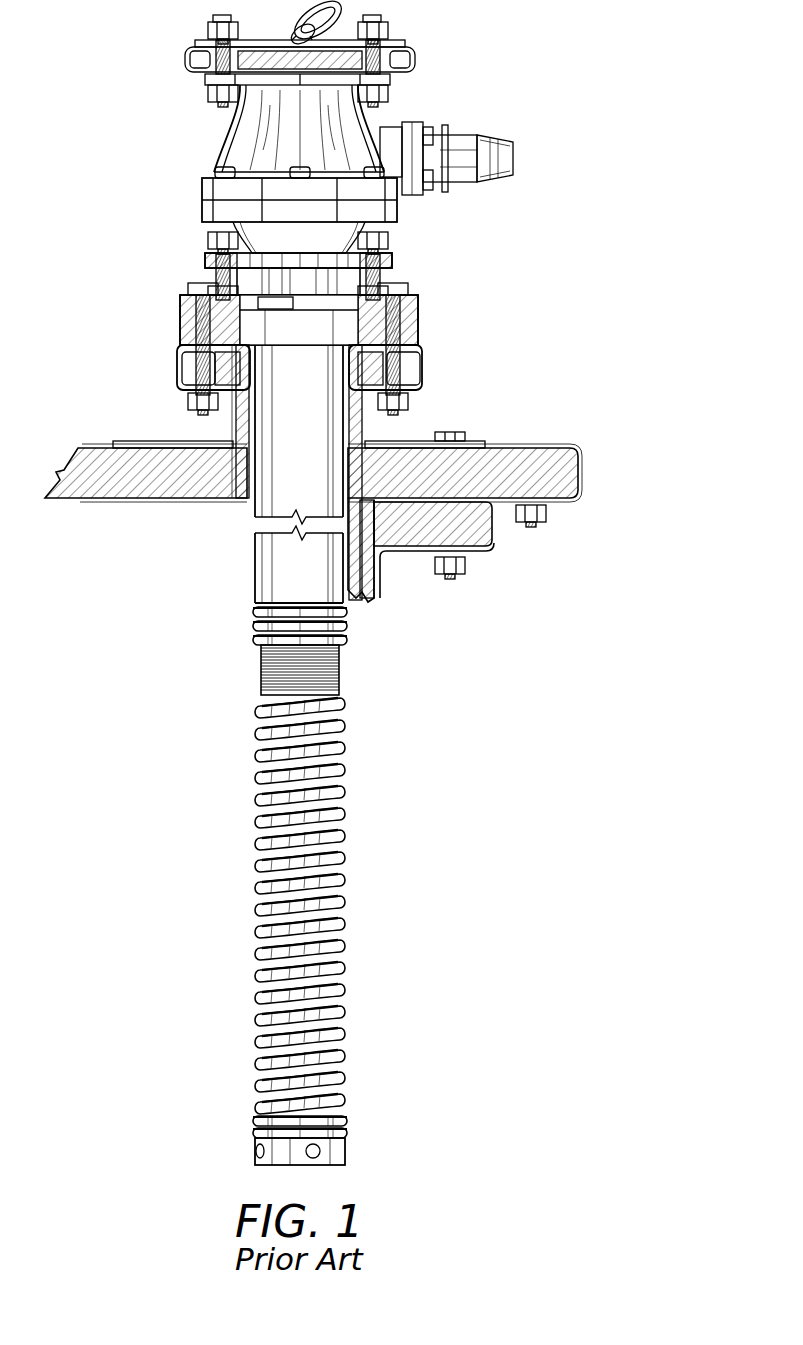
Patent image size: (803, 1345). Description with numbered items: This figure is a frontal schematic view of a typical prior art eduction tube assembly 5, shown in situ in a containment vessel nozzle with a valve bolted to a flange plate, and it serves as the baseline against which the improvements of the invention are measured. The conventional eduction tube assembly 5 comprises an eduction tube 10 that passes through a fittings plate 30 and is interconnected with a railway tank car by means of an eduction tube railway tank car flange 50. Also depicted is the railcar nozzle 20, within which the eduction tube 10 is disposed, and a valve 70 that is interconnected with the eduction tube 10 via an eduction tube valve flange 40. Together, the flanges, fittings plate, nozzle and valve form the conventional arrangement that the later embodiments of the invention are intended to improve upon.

The eduction tube assembly 5 is at (192, 143).
The eduction tube 10 is at (262, 672).
The railcar nozzle 20 is at (488, 546).
The fittings plate 30 is at (578, 450).
The eduction tube valve flange 40 is at (397, 282).
The eduction tube railway tank car flange 50 is at (180, 323).
The valve 70 is at (383, 124).